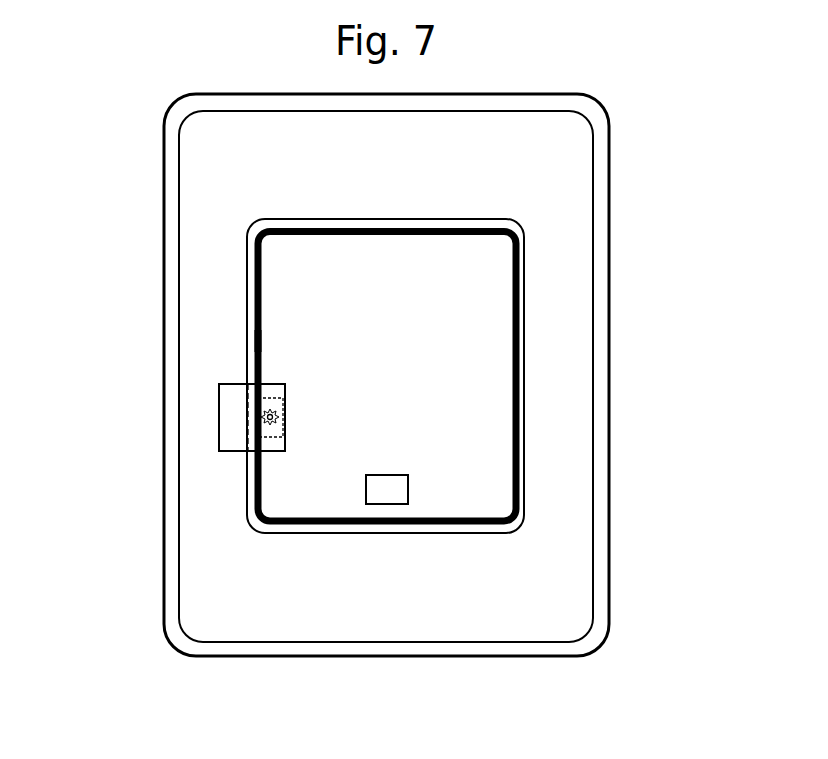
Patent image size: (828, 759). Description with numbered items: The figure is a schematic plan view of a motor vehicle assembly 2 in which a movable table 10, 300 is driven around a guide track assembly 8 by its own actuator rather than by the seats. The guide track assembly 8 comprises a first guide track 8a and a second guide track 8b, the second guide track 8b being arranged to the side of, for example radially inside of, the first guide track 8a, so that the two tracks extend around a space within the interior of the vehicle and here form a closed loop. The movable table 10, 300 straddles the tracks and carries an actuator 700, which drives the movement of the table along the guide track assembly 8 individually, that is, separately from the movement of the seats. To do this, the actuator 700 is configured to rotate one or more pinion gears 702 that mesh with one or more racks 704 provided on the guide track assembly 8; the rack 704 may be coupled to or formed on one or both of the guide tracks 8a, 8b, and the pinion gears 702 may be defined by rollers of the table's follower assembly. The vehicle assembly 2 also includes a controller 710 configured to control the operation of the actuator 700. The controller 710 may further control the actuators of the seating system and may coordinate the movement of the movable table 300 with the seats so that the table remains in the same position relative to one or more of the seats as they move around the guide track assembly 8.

The motor vehicle assembly 2 is at (621, 161).
The guide track assembly 8 is at (372, 382).
The first guide track 8a is at (424, 219).
The second guide track 8b is at (345, 228).
The movable table 10 is at (174, 417).
The movable table 300 is at (230, 407).
The actuator 700 is at (283, 408).
The pinion gear 702 is at (274, 426).
The rack 704 is at (261, 341).
The controller 710 is at (394, 487).